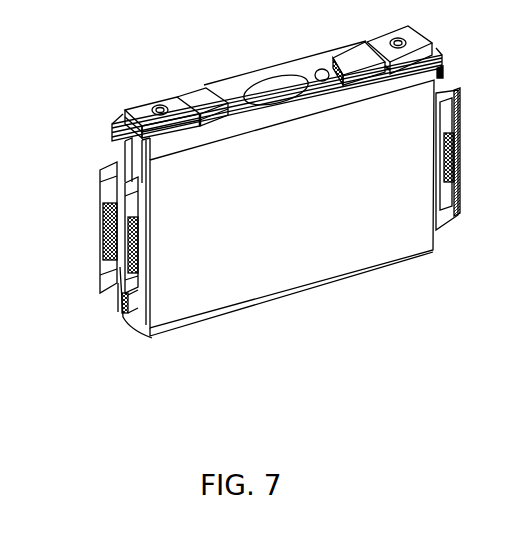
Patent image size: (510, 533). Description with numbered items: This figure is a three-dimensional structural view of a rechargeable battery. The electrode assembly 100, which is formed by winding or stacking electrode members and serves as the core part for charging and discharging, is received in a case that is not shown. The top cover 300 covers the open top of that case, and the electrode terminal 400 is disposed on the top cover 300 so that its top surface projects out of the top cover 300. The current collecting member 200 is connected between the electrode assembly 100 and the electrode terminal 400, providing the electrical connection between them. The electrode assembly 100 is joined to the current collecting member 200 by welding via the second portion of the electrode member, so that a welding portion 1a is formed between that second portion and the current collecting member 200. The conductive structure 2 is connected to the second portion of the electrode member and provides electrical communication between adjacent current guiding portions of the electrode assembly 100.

The electrode assembly 100 is at (272, 258).
The top cover 300 is at (235, 88).
The electrode terminal 400 is at (155, 107).
The current collecting member 200 is at (116, 155).
The conductive structure 2 is at (117, 168).
The welding portion 1a is at (100, 250).